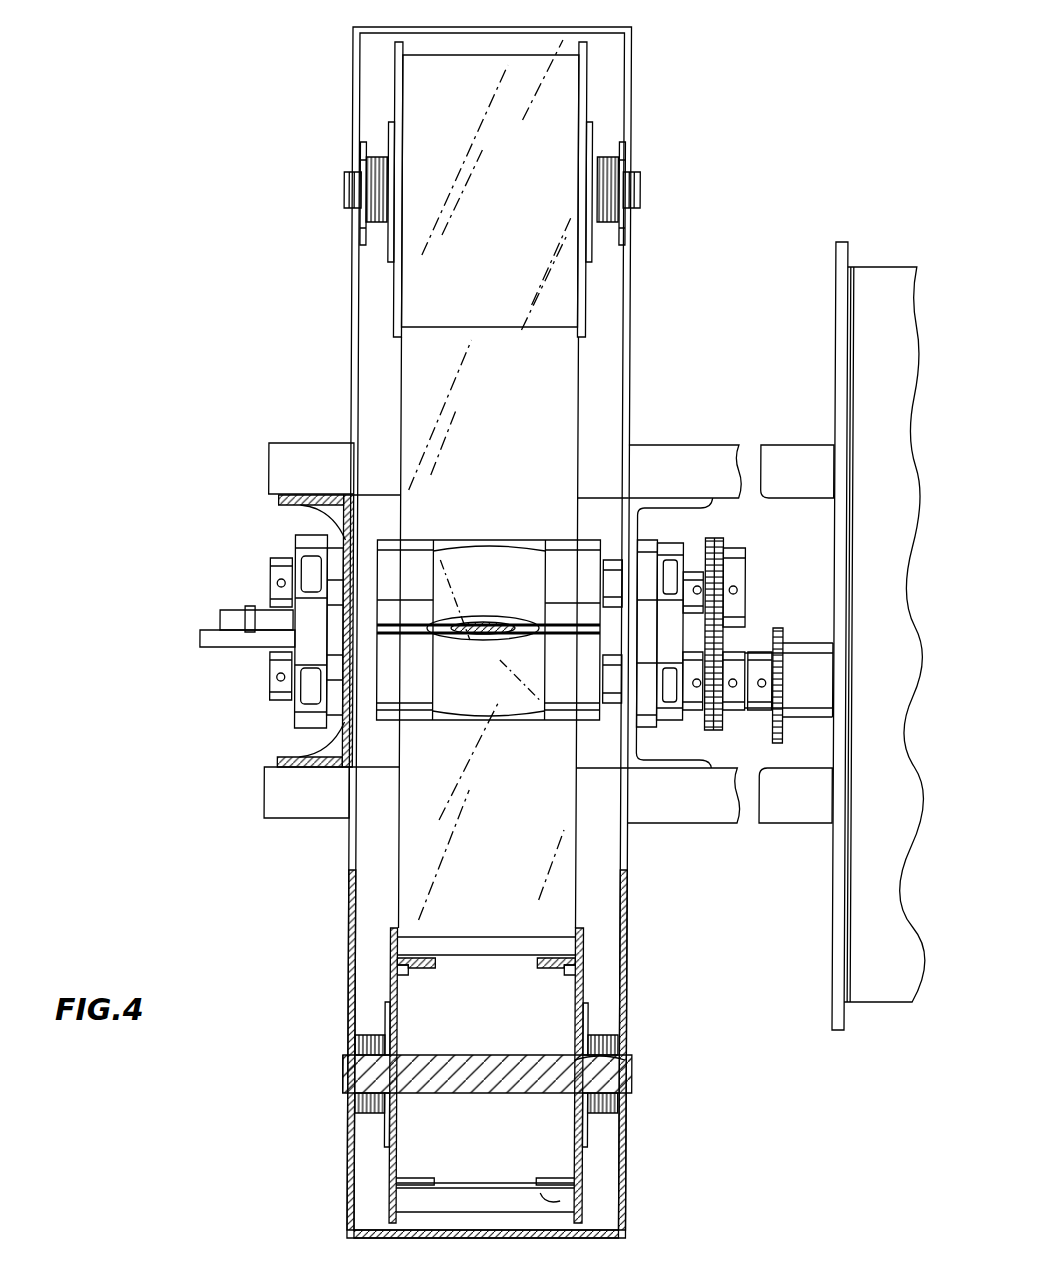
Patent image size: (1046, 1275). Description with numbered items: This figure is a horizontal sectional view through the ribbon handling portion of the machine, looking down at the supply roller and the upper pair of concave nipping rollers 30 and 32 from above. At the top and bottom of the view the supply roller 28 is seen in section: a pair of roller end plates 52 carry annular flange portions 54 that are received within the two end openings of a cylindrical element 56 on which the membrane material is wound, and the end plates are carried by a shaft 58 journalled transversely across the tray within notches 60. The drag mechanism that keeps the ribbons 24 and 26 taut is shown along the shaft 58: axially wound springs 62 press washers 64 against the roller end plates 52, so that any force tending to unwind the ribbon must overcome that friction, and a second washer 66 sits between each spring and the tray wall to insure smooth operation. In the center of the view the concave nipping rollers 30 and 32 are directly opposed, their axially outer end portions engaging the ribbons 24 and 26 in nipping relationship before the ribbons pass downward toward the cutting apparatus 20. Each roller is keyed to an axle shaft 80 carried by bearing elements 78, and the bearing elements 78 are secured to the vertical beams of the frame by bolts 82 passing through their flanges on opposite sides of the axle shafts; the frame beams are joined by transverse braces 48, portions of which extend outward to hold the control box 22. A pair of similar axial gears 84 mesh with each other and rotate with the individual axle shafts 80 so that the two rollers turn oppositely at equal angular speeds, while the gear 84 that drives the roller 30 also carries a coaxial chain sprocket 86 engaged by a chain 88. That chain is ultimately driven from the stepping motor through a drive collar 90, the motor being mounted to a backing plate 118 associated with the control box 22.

The cutting apparatus 20 is at (200, 634).
The control box 22 is at (879, 262).
The ribbon 24 is at (468, 868).
The ribbon 26 is at (470, 406).
The supply roller 28 is at (598, 61).
The concave nipping roller 30 is at (360, 738).
The concave nipping roller 32 is at (378, 540).
The transverse brace 48 is at (280, 443).
The roller end plate 52 is at (394, 985).
The annular flange portion 54 is at (417, 964).
The cylindrical element 56 is at (575, 1200).
The shaft 58 is at (345, 1082).
The notch 60 is at (345, 1068).
The axially wound spring 62 is at (368, 157).
The washer 64 is at (389, 125).
The second washer 66 is at (360, 148).
The bearing element 78 is at (290, 549).
The axle shaft 80 is at (300, 502).
The bolt 82 is at (340, 532).
The axial gear 84 is at (728, 546).
The chain sprocket 86 is at (768, 722).
The chain 88 is at (775, 728).
The drive collar 90 is at (788, 722).
The backing plate 118 is at (840, 243).